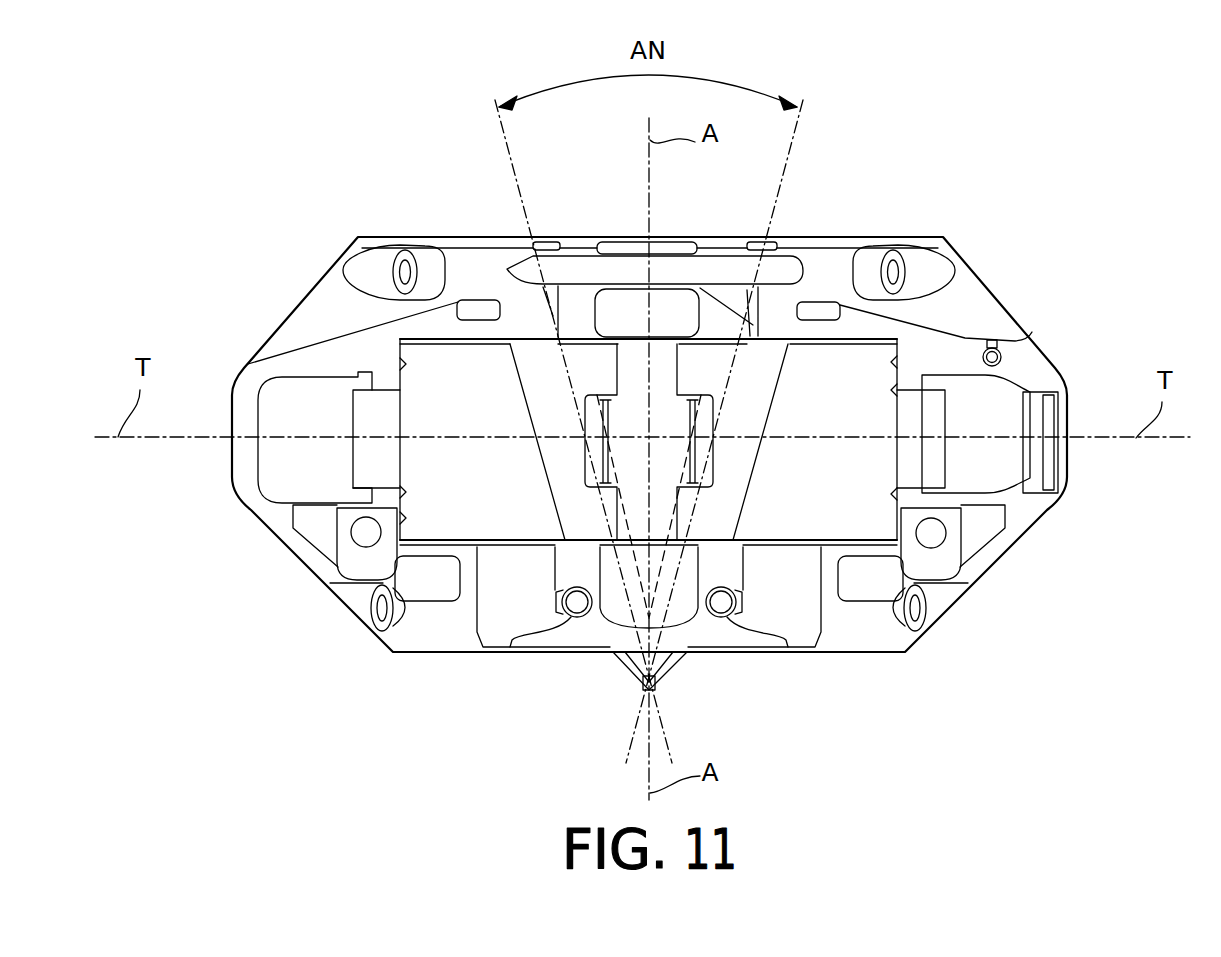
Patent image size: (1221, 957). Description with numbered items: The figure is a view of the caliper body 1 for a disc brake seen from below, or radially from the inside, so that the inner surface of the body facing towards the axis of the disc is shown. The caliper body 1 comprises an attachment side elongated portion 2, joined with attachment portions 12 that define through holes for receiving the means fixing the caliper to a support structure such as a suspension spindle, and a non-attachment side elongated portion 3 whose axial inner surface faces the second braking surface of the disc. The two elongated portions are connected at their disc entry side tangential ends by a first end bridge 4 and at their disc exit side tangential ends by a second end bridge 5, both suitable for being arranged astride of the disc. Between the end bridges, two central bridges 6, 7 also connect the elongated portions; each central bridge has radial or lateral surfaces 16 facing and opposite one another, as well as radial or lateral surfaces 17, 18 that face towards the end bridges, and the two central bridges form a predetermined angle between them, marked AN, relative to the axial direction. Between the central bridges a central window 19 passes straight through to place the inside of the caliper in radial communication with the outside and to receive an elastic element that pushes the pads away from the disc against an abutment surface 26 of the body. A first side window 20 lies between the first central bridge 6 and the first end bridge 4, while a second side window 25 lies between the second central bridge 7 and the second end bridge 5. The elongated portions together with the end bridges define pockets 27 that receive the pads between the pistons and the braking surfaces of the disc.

The caliper body 1 is at (1010, 228).
The attachment side elongated portion 2 is at (805, 603).
The non-attachment side elongated portion 3 is at (823, 267).
The first end bridge 4 is at (1007, 422).
The second end bridge 5 is at (270, 462).
The first central bridge 6 is at (742, 456).
The second central bridge 7 is at (553, 458).
The attachment portion 12 is at (352, 537).
The radial or lateral surfaces 16 is at (676, 382).
The radial or lateral surface 17 is at (770, 398).
The radial or lateral surface 18 is at (518, 385).
The central window 19 is at (618, 427).
The first side window 20 is at (816, 501).
The second side window 25 is at (458, 418).
The abutment surface 26 is at (403, 360).
The pockets 27 is at (402, 518).